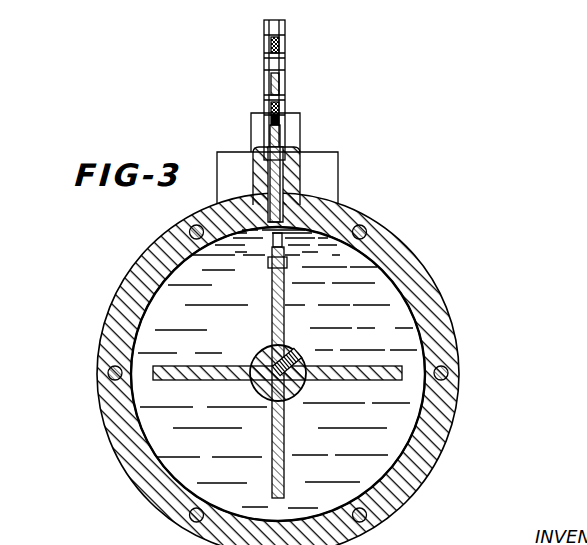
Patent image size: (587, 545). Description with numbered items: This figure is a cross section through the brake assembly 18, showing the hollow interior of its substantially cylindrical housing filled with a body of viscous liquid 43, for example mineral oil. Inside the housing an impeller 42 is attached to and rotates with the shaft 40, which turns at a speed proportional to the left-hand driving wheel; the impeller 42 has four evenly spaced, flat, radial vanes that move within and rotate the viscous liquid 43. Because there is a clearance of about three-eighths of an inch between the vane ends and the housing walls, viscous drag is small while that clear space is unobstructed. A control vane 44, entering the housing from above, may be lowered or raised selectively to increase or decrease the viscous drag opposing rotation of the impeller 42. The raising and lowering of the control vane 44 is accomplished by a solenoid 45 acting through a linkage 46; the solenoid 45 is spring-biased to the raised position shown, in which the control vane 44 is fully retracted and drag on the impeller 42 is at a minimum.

The brake assembly 18 is at (440, 300).
The shaft 40 is at (268, 368).
The impeller 42 is at (270, 292).
The viscous liquid 43 is at (158, 290).
The control vane 44 is at (275, 172).
The solenoid 45 is at (222, 152).
The linkage 46 is at (275, 86).